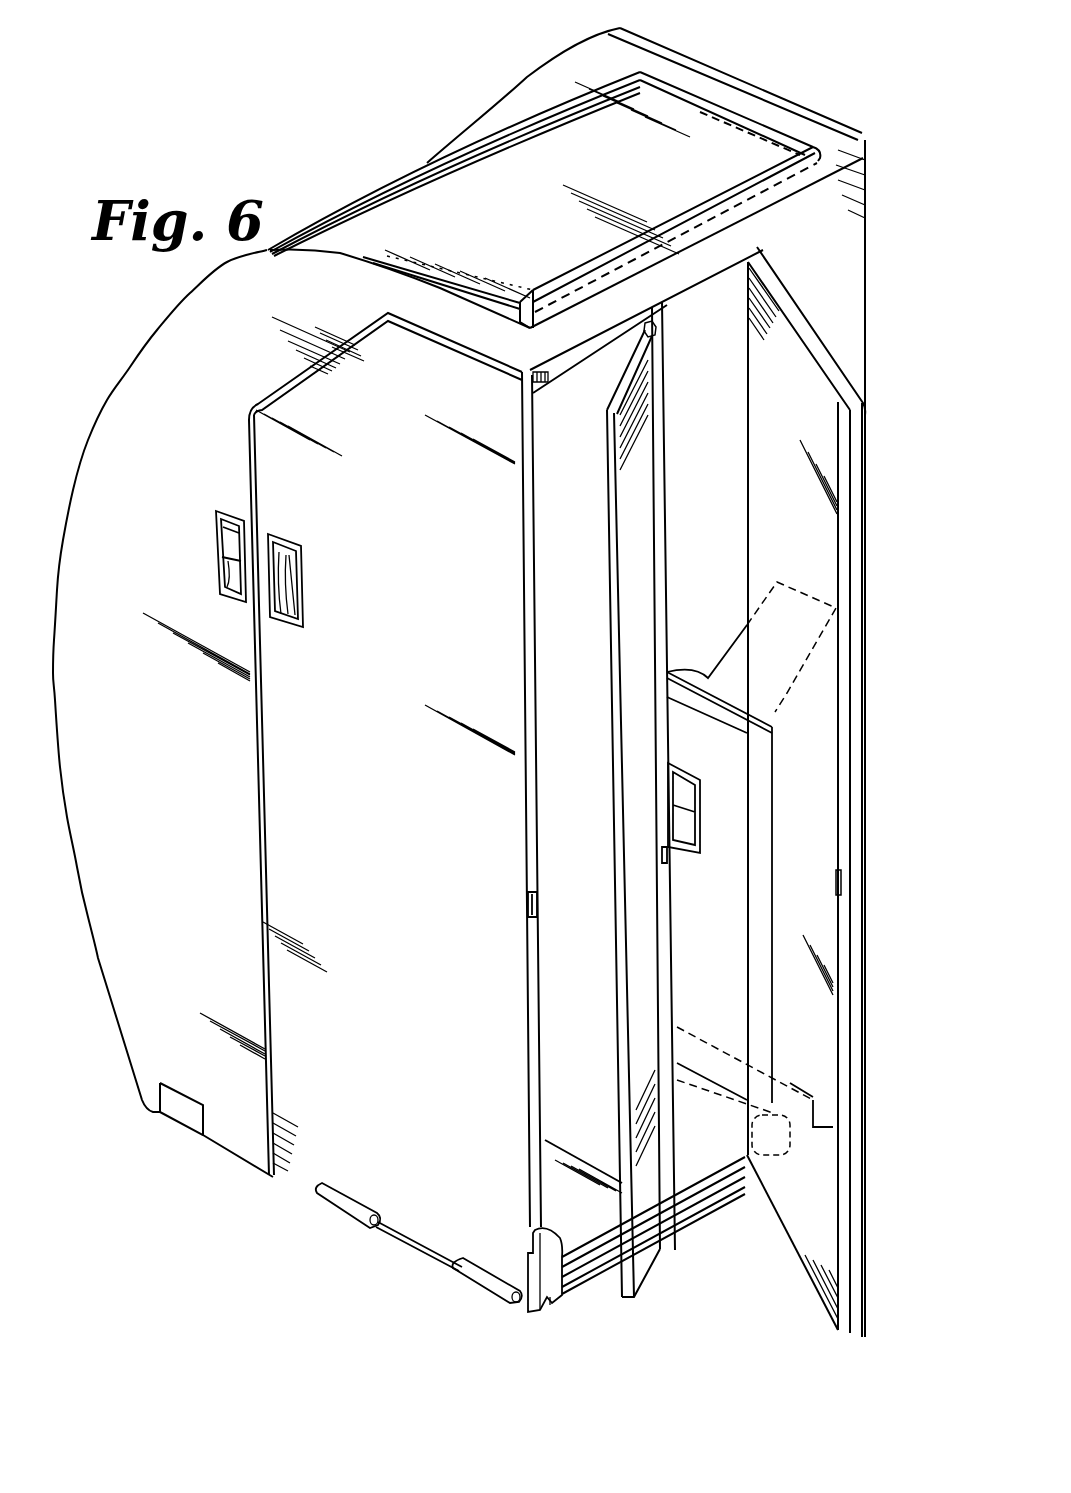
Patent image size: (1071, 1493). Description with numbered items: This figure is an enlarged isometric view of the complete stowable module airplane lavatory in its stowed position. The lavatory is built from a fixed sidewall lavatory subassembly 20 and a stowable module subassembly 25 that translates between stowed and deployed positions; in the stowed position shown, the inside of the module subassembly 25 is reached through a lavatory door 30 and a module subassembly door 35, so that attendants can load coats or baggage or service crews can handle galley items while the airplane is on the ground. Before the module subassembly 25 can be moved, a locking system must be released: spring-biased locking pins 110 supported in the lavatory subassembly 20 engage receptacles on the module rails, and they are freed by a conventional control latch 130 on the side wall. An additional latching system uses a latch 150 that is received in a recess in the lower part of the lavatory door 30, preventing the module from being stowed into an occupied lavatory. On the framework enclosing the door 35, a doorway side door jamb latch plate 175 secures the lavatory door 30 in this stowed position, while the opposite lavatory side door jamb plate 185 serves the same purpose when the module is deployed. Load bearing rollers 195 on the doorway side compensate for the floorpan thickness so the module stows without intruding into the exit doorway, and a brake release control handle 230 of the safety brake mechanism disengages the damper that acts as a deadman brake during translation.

The fixed sidewall lavatory subassembly 20 is at (357, 156).
The stowable module subassembly 25 is at (398, 683).
The lavatory door 30 is at (867, 1190).
The module subassembly door 35 is at (643, 1240).
The spring-biased locking pin 110 is at (527, 505).
The control latch 130 is at (216, 542).
The latch 150 is at (557, 1302).
The door jamb latch plate 175 is at (527, 905).
The door jamb plate 185 is at (668, 858).
The load bearing rollers 195 is at (337, 1213).
The brake release control handle 230 is at (303, 606).